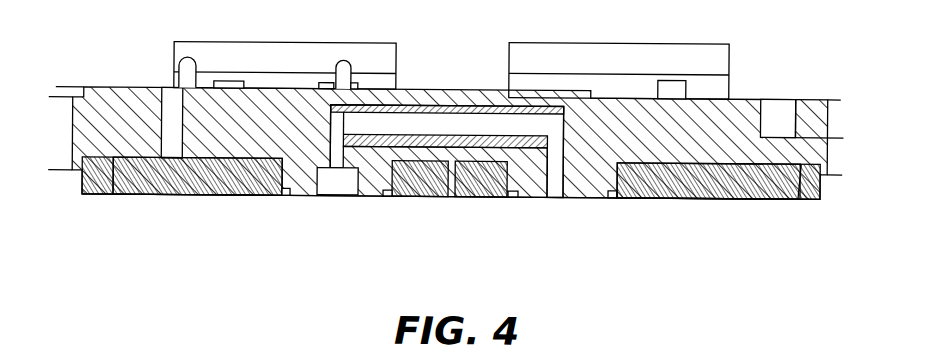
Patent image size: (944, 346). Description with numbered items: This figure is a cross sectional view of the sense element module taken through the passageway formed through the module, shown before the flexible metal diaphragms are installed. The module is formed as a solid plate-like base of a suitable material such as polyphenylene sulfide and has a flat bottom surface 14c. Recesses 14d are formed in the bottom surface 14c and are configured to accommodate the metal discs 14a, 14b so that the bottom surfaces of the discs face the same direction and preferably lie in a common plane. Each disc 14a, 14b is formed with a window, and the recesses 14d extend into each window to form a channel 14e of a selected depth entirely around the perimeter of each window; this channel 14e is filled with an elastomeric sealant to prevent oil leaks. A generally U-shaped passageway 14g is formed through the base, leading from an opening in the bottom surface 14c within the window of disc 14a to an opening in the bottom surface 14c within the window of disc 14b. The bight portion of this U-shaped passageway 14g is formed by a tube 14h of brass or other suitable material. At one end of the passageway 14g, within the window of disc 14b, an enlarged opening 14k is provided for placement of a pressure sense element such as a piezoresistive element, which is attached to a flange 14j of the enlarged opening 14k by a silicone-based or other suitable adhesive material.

The metal disc 14a is at (495, 184).
The metal disc 14b is at (178, 186).
The flat bottom surface 14c is at (297, 194).
The recess 14d is at (115, 187).
The channel 14e is at (287, 194).
The U-shaped passageway 14g is at (555, 184).
The tube 14h is at (465, 124).
The flange 14j is at (322, 189).
The enlarged opening 14k is at (323, 189).